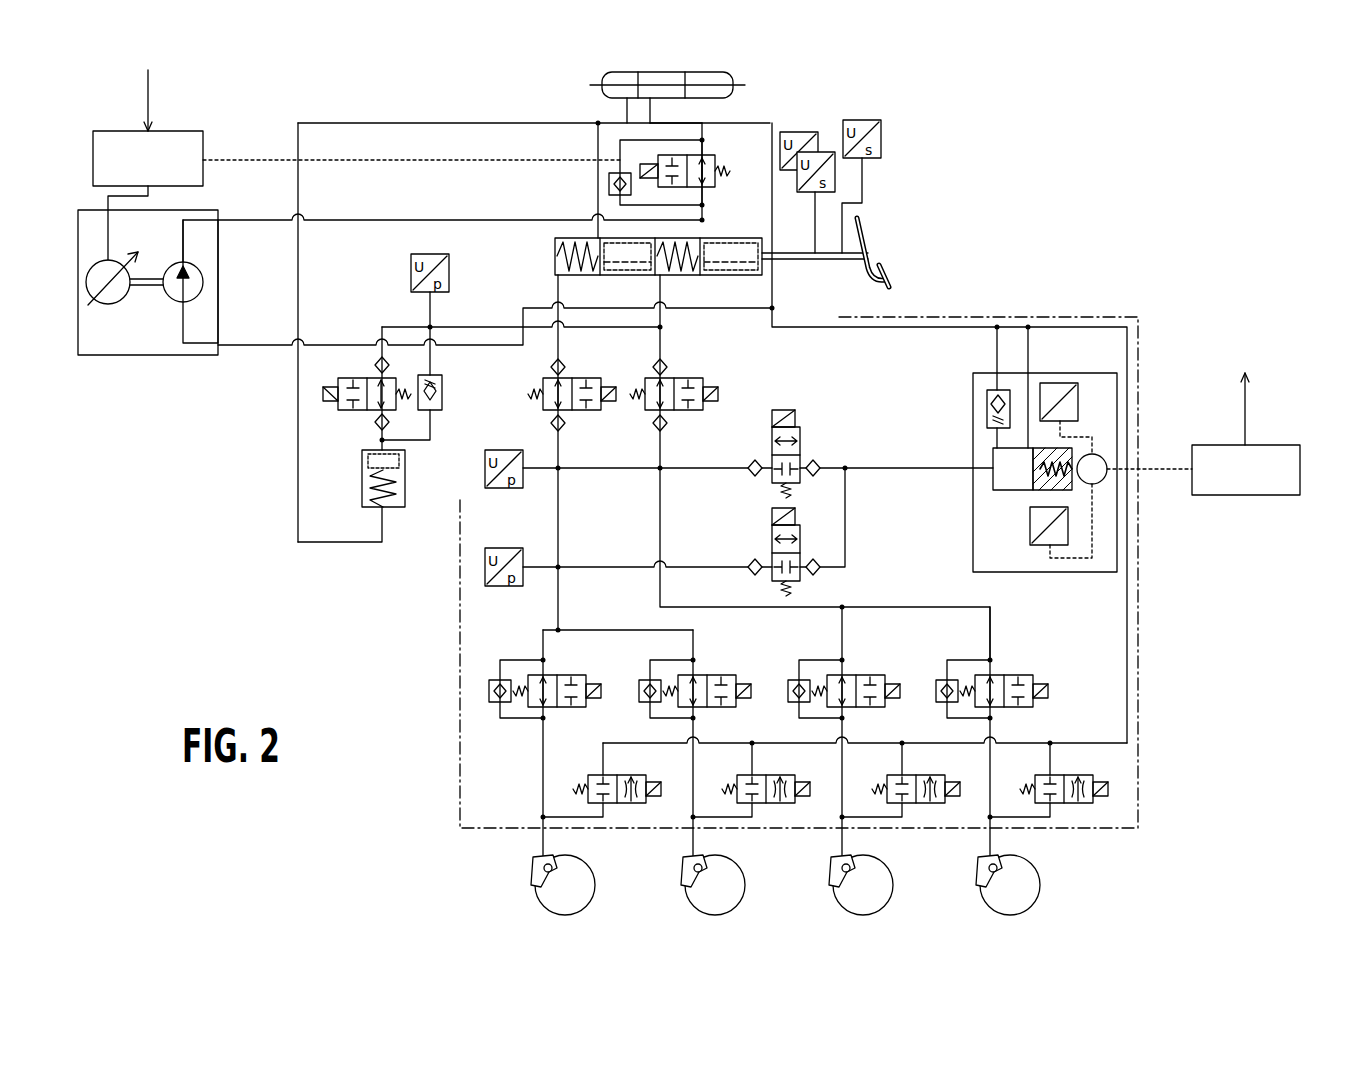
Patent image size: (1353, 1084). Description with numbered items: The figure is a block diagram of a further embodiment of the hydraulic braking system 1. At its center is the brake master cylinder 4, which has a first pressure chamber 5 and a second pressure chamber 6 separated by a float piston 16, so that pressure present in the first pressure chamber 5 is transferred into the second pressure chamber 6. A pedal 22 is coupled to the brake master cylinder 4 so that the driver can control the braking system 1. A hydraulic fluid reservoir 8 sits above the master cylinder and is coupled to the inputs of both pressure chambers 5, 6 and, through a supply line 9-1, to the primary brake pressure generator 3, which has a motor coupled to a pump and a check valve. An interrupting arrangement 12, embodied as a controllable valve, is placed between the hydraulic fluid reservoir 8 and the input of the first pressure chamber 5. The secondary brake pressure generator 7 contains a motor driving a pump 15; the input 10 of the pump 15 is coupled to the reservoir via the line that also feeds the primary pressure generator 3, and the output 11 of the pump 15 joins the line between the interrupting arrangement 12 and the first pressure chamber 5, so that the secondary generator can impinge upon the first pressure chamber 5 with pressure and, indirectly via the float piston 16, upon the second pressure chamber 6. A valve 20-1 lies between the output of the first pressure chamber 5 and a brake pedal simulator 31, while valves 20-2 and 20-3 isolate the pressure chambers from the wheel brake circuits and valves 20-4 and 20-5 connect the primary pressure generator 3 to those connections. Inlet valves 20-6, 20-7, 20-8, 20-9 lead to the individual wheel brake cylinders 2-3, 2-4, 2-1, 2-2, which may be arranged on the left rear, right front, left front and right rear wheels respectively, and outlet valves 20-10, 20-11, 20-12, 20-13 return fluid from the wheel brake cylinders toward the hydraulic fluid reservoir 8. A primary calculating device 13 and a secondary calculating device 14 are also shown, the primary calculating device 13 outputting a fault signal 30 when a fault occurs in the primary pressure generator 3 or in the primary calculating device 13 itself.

The hydraulic braking system 1 is at (1033, 274).
The wheel brake cylinder 2-1 is at (894, 885).
The wheel brake cylinder 2-2 is at (1041, 885).
The wheel brake cylinder 2-3 is at (596, 885).
The wheel brake cylinder 2-4 is at (746, 885).
The primary brake pressure generator 3 is at (972, 393).
The brake master cylinder 4 is at (735, 238).
The first pressure chamber 5 is at (690, 276).
The second pressure chamber 6 is at (556, 242).
The secondary brake pressure generator 7 is at (112, 357).
The hydraulic fluid reservoir 8 is at (600, 100).
The reservoir supply line 9-1 is at (690, 123).
The input of pump 10 is at (218, 347).
The output of pump 11 is at (218, 222).
The interrupting arrangement 12 is at (706, 160).
The primary calculating device 13 is at (1246, 497).
The secondary calculating device 14 is at (118, 143).
The pump 15 is at (178, 302).
The float piston 16 is at (628, 276).
The valve 20-1 is at (362, 411).
The valve 20-2 is at (578, 411).
The valve 20-3 is at (683, 411).
The valve 20-4 is at (803, 446).
The valve 20-5 is at (772, 549).
The inlet valve 20-6 is at (550, 678).
The inlet valve 20-7 is at (700, 678).
The inlet valve 20-8 is at (848, 678).
The inlet valve 20-9 is at (998, 678).
The outlet valve 20-10 is at (613, 805).
The outlet valve 20-11 is at (763, 805).
The outlet valve 20-12 is at (912, 805).
The outlet valve 20-13 is at (1060, 805).
The pedal 22 is at (866, 238).
The fault signal 30 is at (151, 92).
The pressure accumulator 31 is at (400, 509).